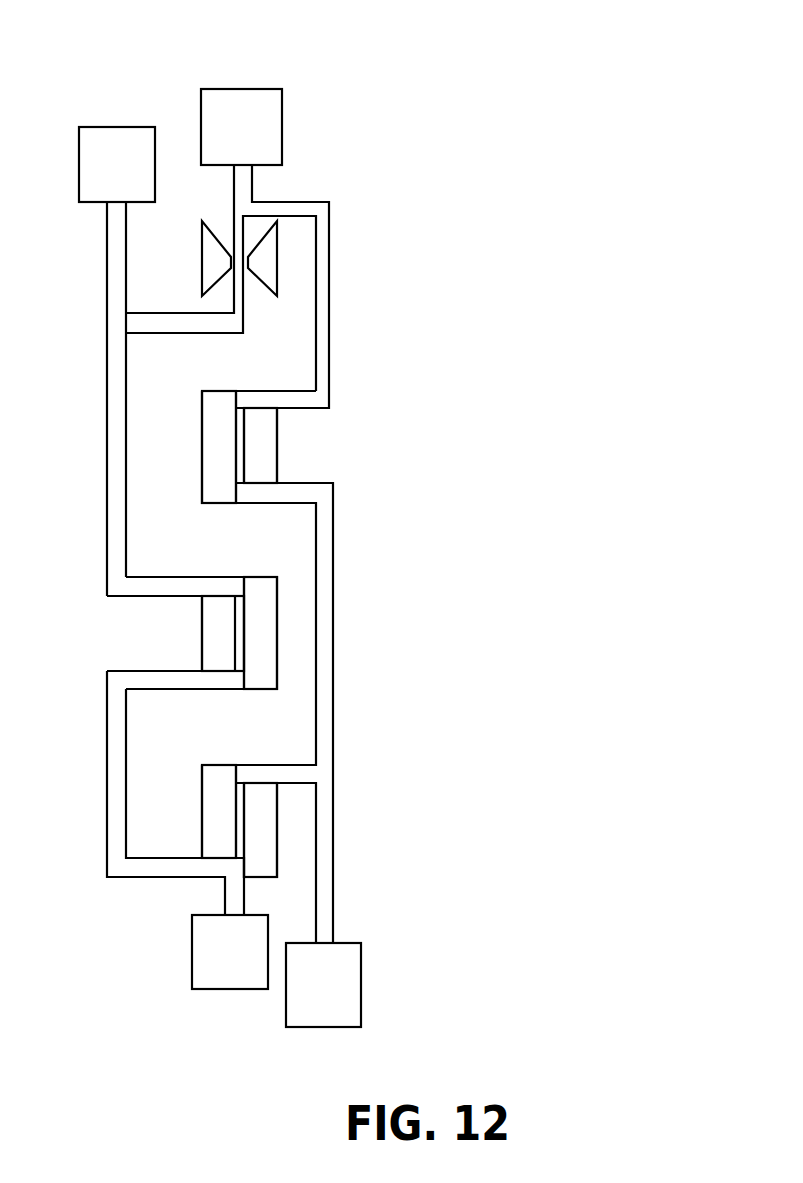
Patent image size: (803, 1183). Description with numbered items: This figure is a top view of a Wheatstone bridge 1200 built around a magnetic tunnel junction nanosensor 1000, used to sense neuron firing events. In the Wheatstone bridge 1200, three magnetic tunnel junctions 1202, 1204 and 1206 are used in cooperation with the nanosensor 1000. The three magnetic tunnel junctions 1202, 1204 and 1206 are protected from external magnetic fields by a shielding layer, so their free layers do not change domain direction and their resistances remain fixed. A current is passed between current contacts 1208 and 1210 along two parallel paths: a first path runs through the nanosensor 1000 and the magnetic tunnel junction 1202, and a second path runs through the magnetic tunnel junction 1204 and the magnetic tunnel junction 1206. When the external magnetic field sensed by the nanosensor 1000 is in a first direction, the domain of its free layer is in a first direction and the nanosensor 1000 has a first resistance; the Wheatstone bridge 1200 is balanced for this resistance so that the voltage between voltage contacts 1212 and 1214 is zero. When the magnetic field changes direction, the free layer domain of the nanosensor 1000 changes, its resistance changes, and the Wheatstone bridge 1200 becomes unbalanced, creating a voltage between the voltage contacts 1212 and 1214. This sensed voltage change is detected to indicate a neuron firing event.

The Wheatstone bridge 1200 is at (607, 474).
The nanosensor 1000 is at (293, 259).
The magnetic tunnel junction 1202 is at (298, 447).
The magnetic tunnel junction 1204 is at (187, 628).
The magnetic tunnel junction 1206 is at (301, 822).
The current contact 1208 is at (97, 147).
The current contact 1210 is at (350, 980).
The voltage contact 1212 is at (282, 126).
The voltage contact 1214 is at (212, 984).